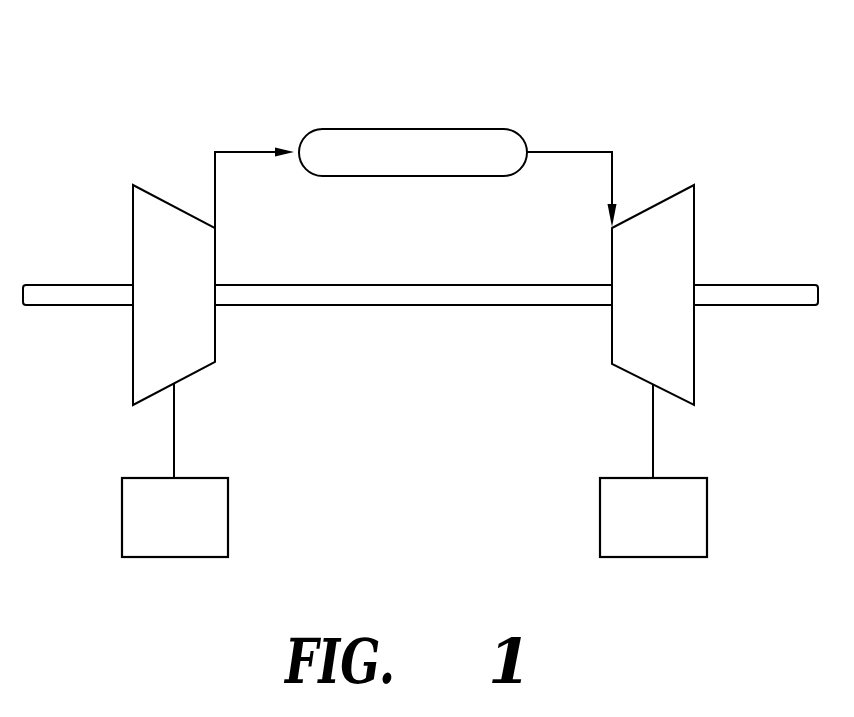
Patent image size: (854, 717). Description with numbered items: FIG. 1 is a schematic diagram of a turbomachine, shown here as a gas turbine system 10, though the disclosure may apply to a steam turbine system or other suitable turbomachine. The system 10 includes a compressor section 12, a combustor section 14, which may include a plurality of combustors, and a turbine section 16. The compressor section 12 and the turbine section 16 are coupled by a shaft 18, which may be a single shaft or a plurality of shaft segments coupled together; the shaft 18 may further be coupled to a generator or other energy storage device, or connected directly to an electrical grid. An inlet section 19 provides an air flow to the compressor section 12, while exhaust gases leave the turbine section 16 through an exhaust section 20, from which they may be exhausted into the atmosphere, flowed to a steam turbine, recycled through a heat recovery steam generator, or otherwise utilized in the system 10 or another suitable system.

The gas turbine system 10 is at (211, 91).
The compressor section 12 is at (133, 210).
The combustor section 14 is at (458, 129).
The turbine section 16 is at (694, 209).
The shaft 18 is at (363, 307).
The inlet section 19 is at (158, 535).
The exhaust section 20 is at (637, 534).